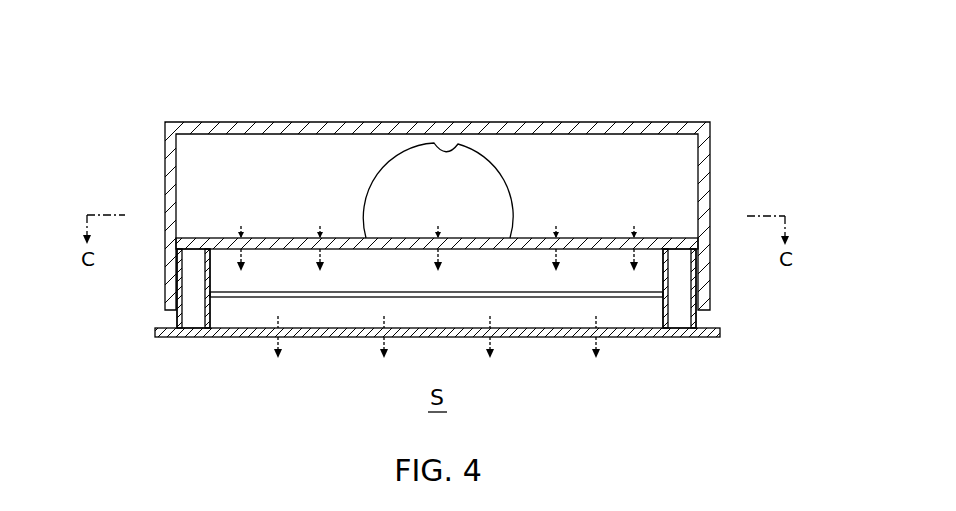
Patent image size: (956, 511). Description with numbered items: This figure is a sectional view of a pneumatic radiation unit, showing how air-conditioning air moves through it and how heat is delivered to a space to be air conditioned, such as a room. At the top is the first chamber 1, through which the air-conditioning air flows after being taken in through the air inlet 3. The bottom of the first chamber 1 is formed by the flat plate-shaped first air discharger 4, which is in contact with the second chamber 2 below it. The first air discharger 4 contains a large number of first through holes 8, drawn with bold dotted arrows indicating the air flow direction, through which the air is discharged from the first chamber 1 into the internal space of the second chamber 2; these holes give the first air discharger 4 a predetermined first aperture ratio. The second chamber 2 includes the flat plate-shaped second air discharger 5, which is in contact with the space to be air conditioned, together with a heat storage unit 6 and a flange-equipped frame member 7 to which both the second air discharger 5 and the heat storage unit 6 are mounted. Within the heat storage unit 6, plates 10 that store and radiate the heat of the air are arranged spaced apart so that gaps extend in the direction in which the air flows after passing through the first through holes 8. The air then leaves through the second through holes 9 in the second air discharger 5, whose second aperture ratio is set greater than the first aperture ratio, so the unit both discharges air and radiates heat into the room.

The first chamber 1 is at (556, 118).
The second chamber 2 is at (564, 343).
The air inlet 3 is at (457, 143).
The first air discharger 4 is at (531, 238).
The second air discharger 5 is at (530, 338).
The heat storage unit 6 is at (374, 289).
The flange-equipped frame member 7 is at (680, 338).
The first through holes 8 is at (313, 238).
The second through holes 9 is at (248, 338).
The plates 10 is at (325, 338).